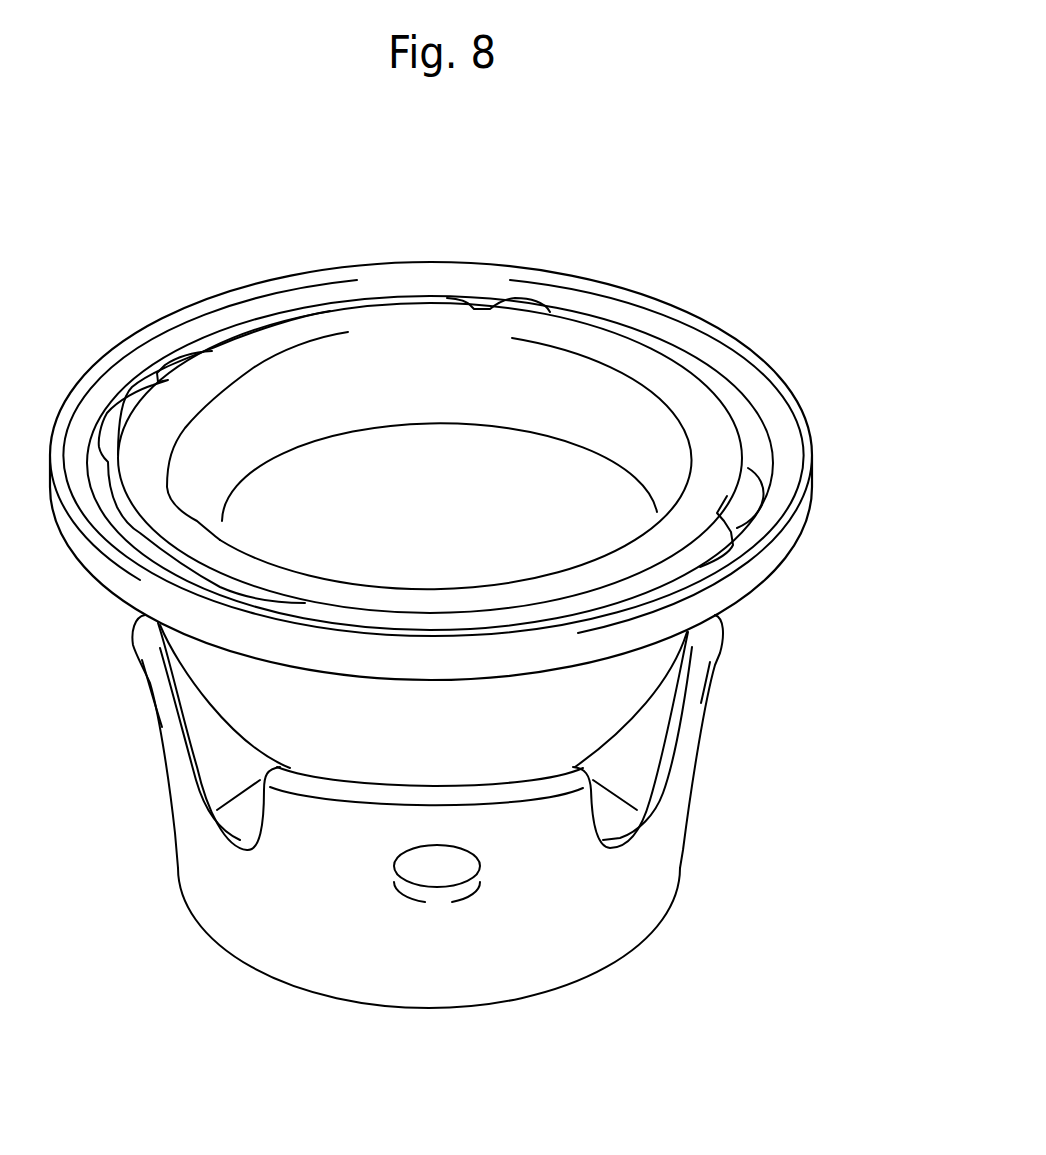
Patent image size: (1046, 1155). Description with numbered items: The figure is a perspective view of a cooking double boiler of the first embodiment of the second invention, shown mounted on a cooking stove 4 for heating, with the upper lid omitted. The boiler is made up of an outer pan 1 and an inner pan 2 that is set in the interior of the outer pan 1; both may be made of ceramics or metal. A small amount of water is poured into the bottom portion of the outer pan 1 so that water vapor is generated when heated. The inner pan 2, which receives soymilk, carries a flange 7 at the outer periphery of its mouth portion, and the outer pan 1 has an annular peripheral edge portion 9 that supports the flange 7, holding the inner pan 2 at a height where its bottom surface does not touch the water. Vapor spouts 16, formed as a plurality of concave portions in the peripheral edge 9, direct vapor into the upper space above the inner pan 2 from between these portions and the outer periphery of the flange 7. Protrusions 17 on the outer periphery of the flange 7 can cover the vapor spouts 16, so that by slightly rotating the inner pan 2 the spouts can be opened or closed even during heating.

The outer pan 1 is at (612, 692).
The inner pan 2 is at (628, 412).
The cooking stove 4 is at (635, 890).
The flange 7 is at (717, 437).
The annular peripheral edge portion 9 is at (722, 395).
The vapor spouts 16 is at (750, 497).
The protrusions 17 is at (700, 532).